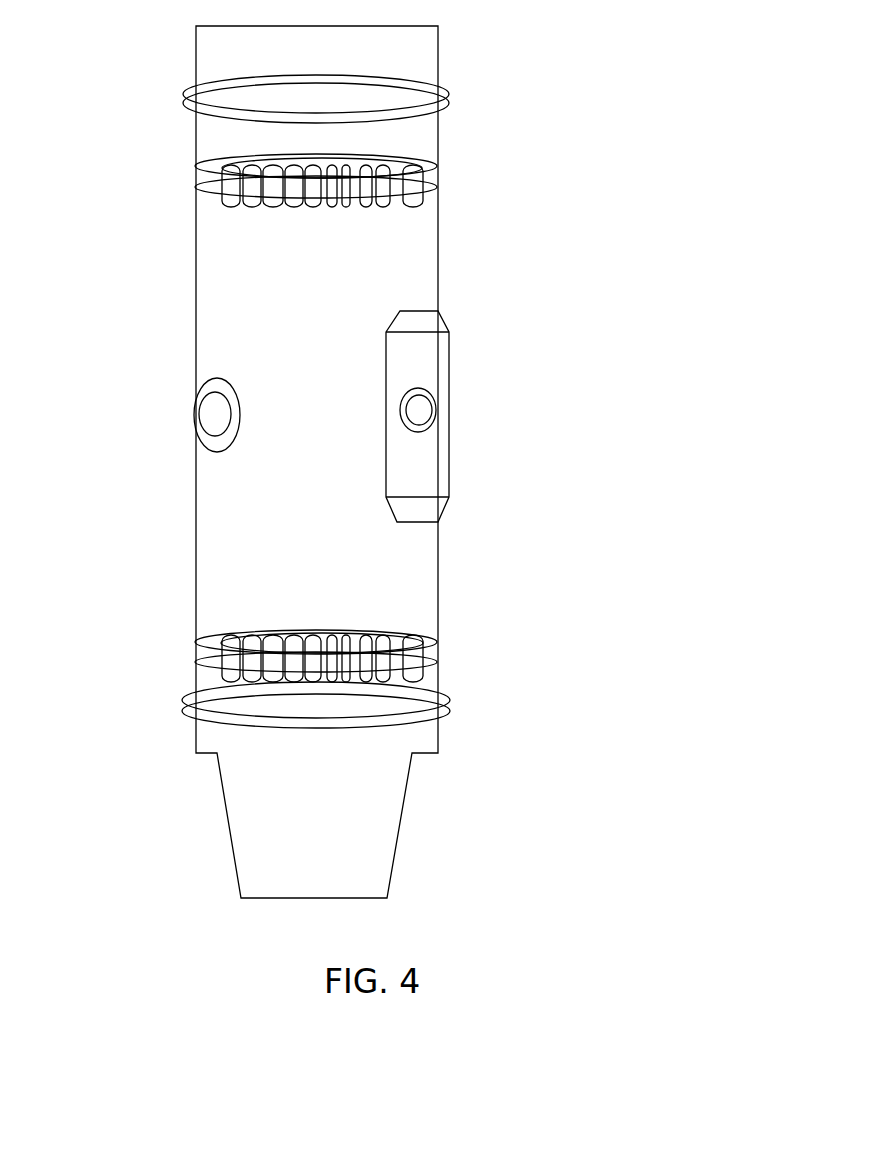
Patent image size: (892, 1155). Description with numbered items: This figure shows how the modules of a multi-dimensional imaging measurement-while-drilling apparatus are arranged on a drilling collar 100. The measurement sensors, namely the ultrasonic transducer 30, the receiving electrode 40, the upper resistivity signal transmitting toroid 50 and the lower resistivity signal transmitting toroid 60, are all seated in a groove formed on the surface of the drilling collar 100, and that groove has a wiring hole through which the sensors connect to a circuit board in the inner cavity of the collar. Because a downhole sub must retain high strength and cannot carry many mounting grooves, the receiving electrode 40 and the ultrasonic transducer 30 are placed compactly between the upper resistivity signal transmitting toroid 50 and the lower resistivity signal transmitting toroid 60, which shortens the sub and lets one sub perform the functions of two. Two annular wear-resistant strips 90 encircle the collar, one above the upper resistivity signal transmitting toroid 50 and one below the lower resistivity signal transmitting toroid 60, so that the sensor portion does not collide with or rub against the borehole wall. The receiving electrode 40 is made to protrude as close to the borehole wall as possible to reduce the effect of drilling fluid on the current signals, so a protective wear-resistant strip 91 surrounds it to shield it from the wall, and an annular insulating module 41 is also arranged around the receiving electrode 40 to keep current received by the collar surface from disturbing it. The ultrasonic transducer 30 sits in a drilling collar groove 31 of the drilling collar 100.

The drilling collar 100 is at (438, 537).
The annular wear-resistant strip 90 is at (438, 100).
The upper resistivity signal transmitting toroid 50 is at (435, 165).
The lower resistivity signal transmitting toroid 60 is at (437, 657).
The protective wear-resistant strip 91 is at (451, 357).
The receiving electrode 40 is at (421, 403).
The annular insulating module 41 is at (420, 390).
The ultrasonic transducer 30 is at (208, 416).
The drilling collar groove 31 is at (218, 382).